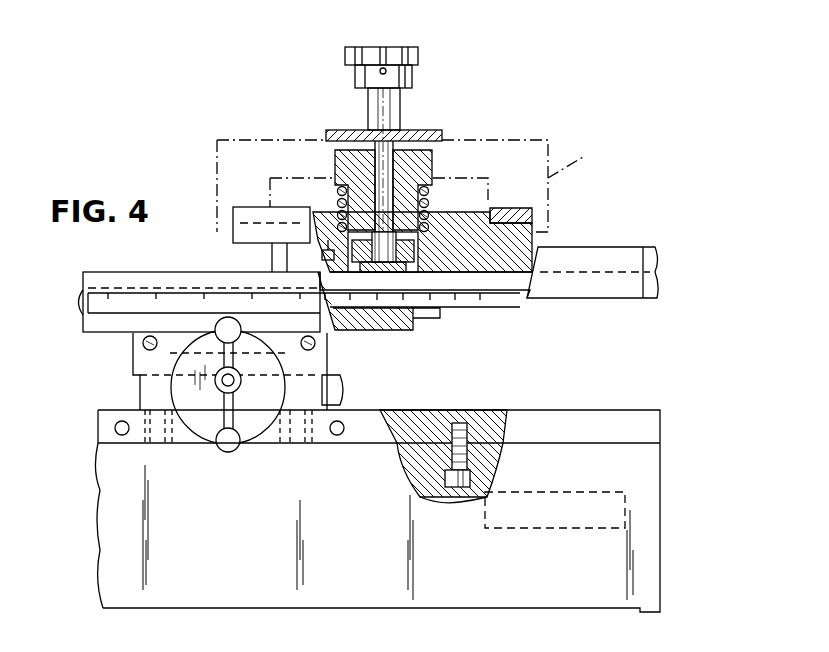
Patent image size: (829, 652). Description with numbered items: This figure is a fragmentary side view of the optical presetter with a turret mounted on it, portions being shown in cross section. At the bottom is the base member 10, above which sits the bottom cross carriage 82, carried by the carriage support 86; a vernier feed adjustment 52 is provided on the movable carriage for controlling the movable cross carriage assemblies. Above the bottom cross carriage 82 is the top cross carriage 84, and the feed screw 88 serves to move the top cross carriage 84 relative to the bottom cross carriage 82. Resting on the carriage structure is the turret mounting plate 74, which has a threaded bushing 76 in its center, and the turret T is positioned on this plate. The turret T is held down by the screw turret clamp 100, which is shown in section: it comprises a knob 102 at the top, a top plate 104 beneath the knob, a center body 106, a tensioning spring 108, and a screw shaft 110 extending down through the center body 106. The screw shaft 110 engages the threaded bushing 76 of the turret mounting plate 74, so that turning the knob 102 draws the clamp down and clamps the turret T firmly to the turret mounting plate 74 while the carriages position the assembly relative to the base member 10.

The base member 10 is at (660, 490).
The vernier feed adjustment 52 is at (268, 437).
The turret mounting plate 74 is at (233, 236).
The threaded bushing 76 is at (405, 250).
The bottom cross carriage 82 is at (327, 366).
The top cross carriage 84 is at (600, 246).
The carriage support 86 is at (347, 392).
The feed screw 88 is at (482, 310).
The screw turret clamp 100 is at (374, 156).
The knob 102 is at (347, 52).
The top plate 104 is at (445, 128).
The center body 106 is at (433, 165).
The tensioning spring 108 is at (430, 192).
The screw shaft 110 is at (408, 238).
The turret T is at (408, 186).